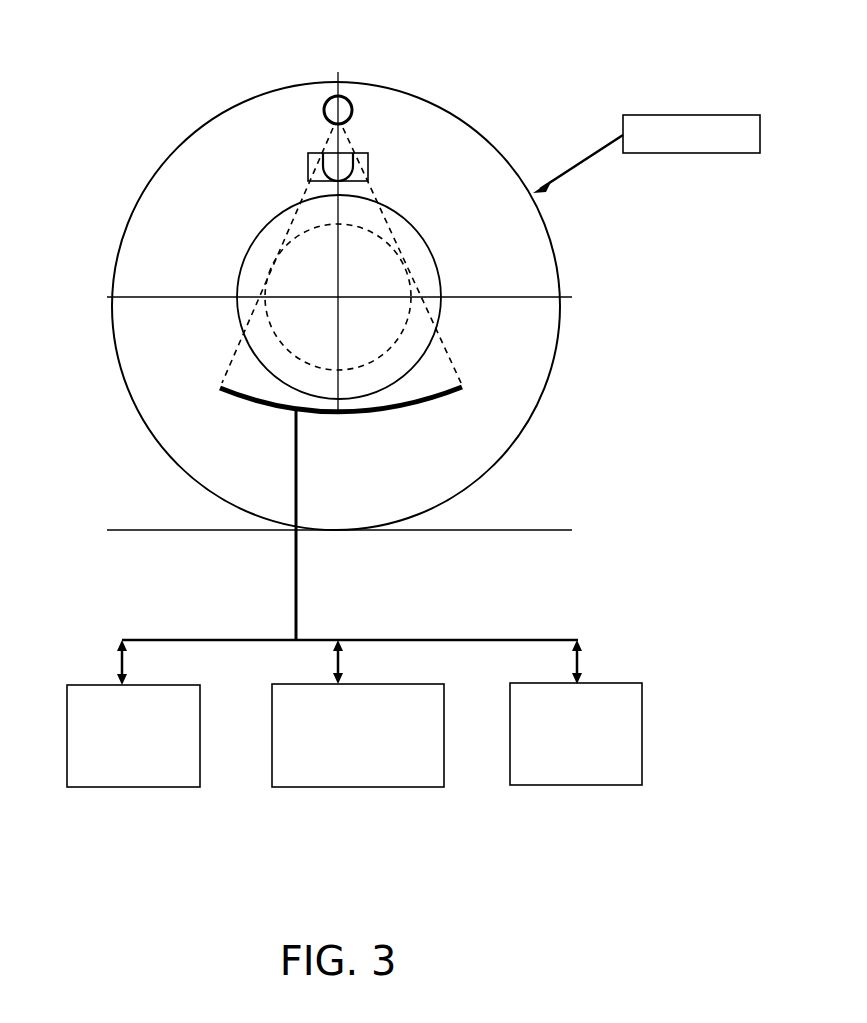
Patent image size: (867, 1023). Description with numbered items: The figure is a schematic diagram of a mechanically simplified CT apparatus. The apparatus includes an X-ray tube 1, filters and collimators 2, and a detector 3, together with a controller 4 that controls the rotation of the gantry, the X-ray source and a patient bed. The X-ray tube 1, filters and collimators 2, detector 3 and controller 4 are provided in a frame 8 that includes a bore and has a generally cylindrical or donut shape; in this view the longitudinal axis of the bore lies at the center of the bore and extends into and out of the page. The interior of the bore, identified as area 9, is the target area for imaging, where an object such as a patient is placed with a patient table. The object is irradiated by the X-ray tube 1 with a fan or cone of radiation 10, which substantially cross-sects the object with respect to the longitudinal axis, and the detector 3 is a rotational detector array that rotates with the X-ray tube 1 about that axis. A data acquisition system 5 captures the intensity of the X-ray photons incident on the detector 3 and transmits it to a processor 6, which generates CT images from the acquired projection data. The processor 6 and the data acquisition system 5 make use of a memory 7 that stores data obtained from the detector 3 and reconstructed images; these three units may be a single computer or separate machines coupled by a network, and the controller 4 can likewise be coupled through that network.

The X-ray tube 1 is at (351, 100).
The filters and collimators 2 is at (369, 160).
The detector 3 is at (462, 388).
The controller 4 is at (720, 153).
The data acquisition system 5 is at (133, 787).
The processor 6 is at (380, 787).
The memory 7 is at (597, 785).
The frame 8 is at (135, 200).
The area 9 is at (270, 330).
The fan or cone of radiation 10 is at (227, 363).